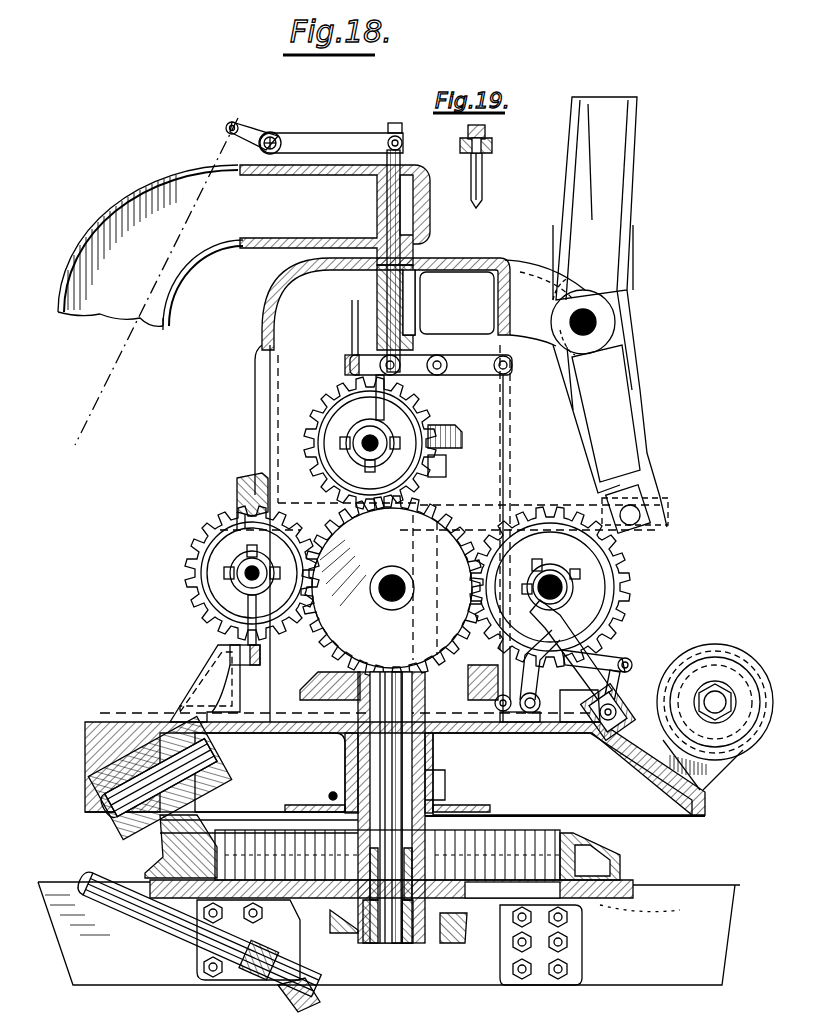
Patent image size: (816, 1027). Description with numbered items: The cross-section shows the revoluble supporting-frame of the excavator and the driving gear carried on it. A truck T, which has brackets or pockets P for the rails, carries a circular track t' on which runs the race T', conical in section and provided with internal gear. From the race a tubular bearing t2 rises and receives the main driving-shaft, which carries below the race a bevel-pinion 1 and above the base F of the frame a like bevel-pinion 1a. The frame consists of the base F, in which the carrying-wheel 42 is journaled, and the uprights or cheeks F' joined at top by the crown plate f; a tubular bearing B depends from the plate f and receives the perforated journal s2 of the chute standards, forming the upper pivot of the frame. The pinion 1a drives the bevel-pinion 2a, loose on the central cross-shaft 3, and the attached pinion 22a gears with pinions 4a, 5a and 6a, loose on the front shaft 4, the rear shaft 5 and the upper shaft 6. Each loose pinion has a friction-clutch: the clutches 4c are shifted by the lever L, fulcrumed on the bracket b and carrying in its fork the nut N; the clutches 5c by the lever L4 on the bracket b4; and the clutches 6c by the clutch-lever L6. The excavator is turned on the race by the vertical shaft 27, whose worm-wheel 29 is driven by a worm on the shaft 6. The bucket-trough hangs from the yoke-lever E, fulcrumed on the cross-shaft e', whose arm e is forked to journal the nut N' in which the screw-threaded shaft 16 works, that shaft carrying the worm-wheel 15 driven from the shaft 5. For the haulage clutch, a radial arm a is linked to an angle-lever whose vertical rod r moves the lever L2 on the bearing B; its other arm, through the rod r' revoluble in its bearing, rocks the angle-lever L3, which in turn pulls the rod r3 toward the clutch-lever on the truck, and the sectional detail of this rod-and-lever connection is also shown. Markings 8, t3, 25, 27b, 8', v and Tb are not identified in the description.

In FIG. 18, the curved cowl / guard 8 is at (150, 281).
In FIG. 18, the angle-lever L3 is at (300, 132).
In FIG. 18, the rod r3 is at (232, 134).
In FIG. 18, the bolt t3 is at (390, 126).
In FIG. 19, the bolt t3 is at (467, 133).
In FIG. 18, the rod r' is at (380, 261).
In FIG. 19, the rod r' is at (496, 180).
In FIG. 18, the perforated journal s2 is at (428, 240).
In FIG. 18, the tubular bearing B is at (355, 290).
In FIG. 18, the crown plate f is at (457, 303).
In FIG. 18, the cheeks F' is at (380, 533).
In FIG. 18, the lever L2 is at (455, 362).
In FIG. 18, the clutch-lever L6 is at (348, 355).
In FIG. 18, the upper cross-shaft 6 is at (370, 443).
In FIG. 18, the pinion 6a is at (318, 402).
In FIG. 18, the friction-clutches 6c is at (426, 412).
In FIG. 18, the worm-wheel 29 is at (460, 434).
In FIG. 18, the vertical shaft 27 is at (447, 470).
In FIG. 18, the bevel-pinion 2a is at (455, 512).
In FIG. 18, the vertical rod r is at (495, 548).
In FIG. 18, the central cross-shaft 3 is at (392, 602).
In FIG. 18, the pinion 22a is at (371, 544).
In FIG. 18, the rear cross-shaft 5 is at (252, 573).
In FIG. 18, the pinion 5a is at (196, 540).
In FIG. 18, the friction-clutches 5c is at (230, 546).
In FIG. 18, the lever L4 is at (262, 620).
In FIG. 18, the worm-wheel 15 is at (238, 480).
In FIG. 18, the bracket b4 is at (217, 683).
In FIG. 18, the bevel-pinion 1a is at (303, 688).
In FIG. 18, the bevel-pinion 1 is at (399, 820).
In FIG. 18, the base F is at (380, 771).
In FIG. 18, the tubular bearing t2 is at (440, 765).
In FIG. 18, the carrying-wheel 42 is at (159, 797).
In FIG. 18, the race T' is at (391, 863).
In FIG. 18, the ribs 25 is at (387, 855).
In FIG. 18, the plate 27b is at (436, 828).
In FIG. 18, the circular track t' is at (644, 867).
In FIG. 18, the truck T is at (385, 933).
In FIG. 18, the rod 8' is at (198, 931).
In FIG. 18, the yoke-lever E is at (610, 312).
In FIG. 18, the cross-shaft e' is at (602, 316).
In FIG. 18, the arm e is at (596, 419).
In FIG. 18, the nut N' is at (639, 494).
In FIG. 18, the shaft 16 is at (679, 507).
In FIG. 18, the shaft 4 is at (550, 587).
In FIG. 18, the friction-clutches 4c is at (583, 589).
In FIG. 18, the pinion 4a is at (628, 592).
In FIG. 18, the shifting-lever L is at (600, 640).
In FIG. 18, the link v is at (593, 661).
In FIG. 18, the radial arm a is at (628, 670).
In FIG. 18, the bracket b is at (595, 712).
In FIG. 18, the nut N is at (635, 738).
In FIG. 18, the bracket Tb is at (504, 693).
In FIG. 18, the pockets P is at (715, 717).